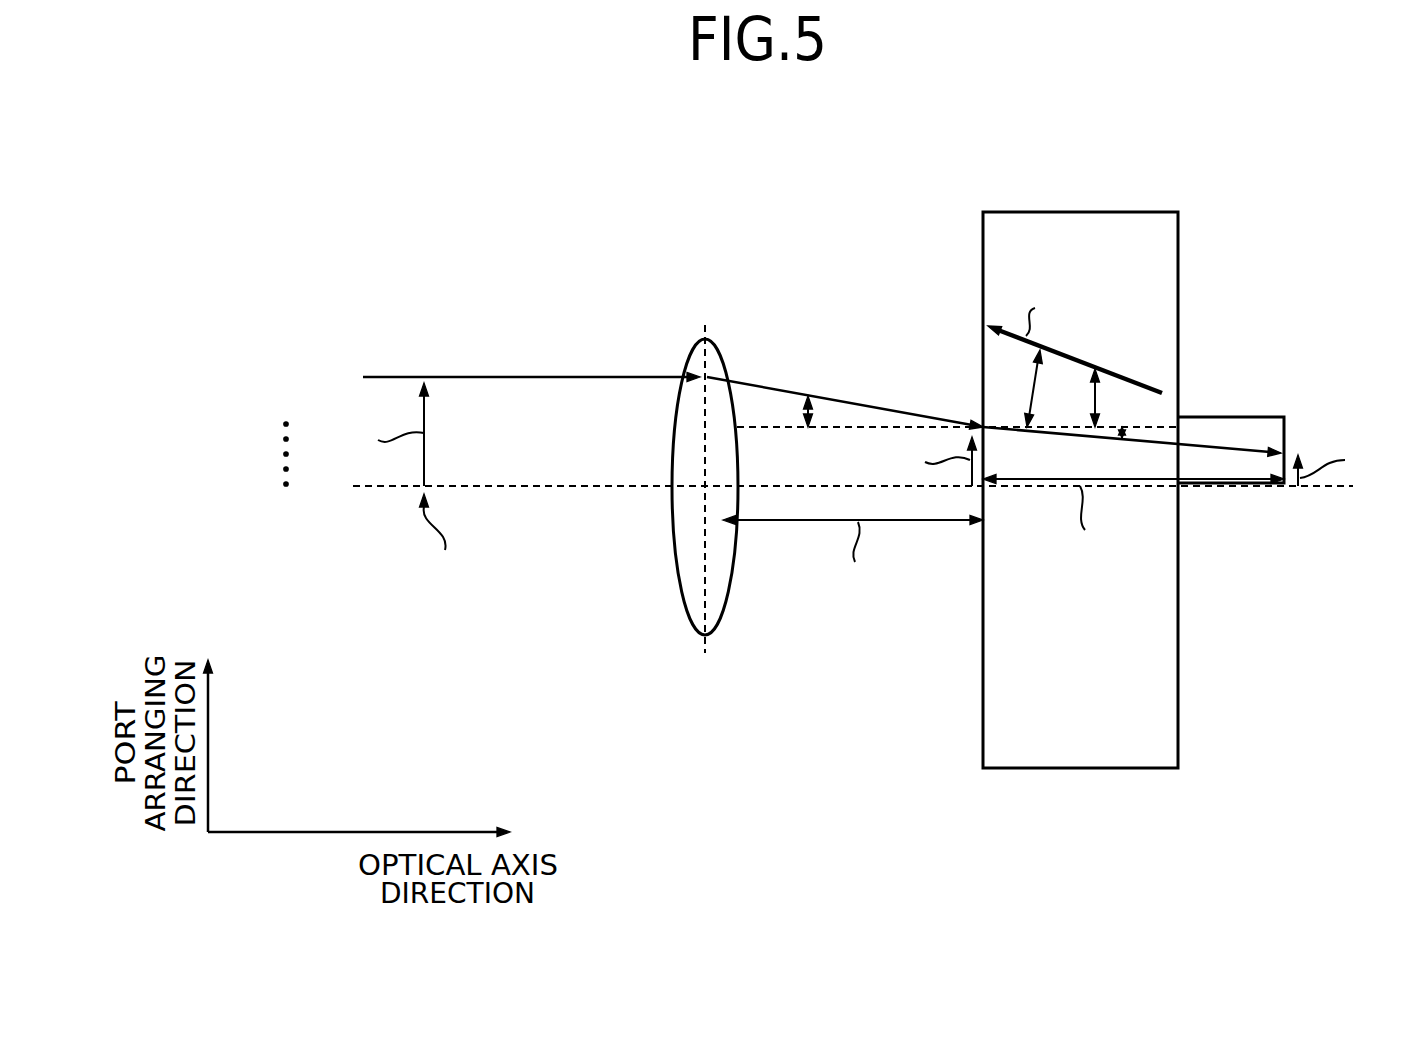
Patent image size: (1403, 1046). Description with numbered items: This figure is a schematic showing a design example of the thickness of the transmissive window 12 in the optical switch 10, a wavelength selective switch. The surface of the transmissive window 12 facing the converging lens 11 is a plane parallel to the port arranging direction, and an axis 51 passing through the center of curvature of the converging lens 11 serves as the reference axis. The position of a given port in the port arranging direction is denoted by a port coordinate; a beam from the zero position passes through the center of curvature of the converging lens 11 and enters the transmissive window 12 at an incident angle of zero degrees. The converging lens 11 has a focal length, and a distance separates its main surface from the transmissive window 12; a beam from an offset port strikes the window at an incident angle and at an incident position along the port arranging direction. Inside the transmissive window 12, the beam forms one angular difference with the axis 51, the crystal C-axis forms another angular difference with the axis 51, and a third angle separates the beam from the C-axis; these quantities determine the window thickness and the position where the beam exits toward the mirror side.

The optical switch 10 is at (834, 214).
The converging lens 11 is at (720, 352).
The transmissive window 12 is at (1105, 212).
The axis 51 is at (512, 486).